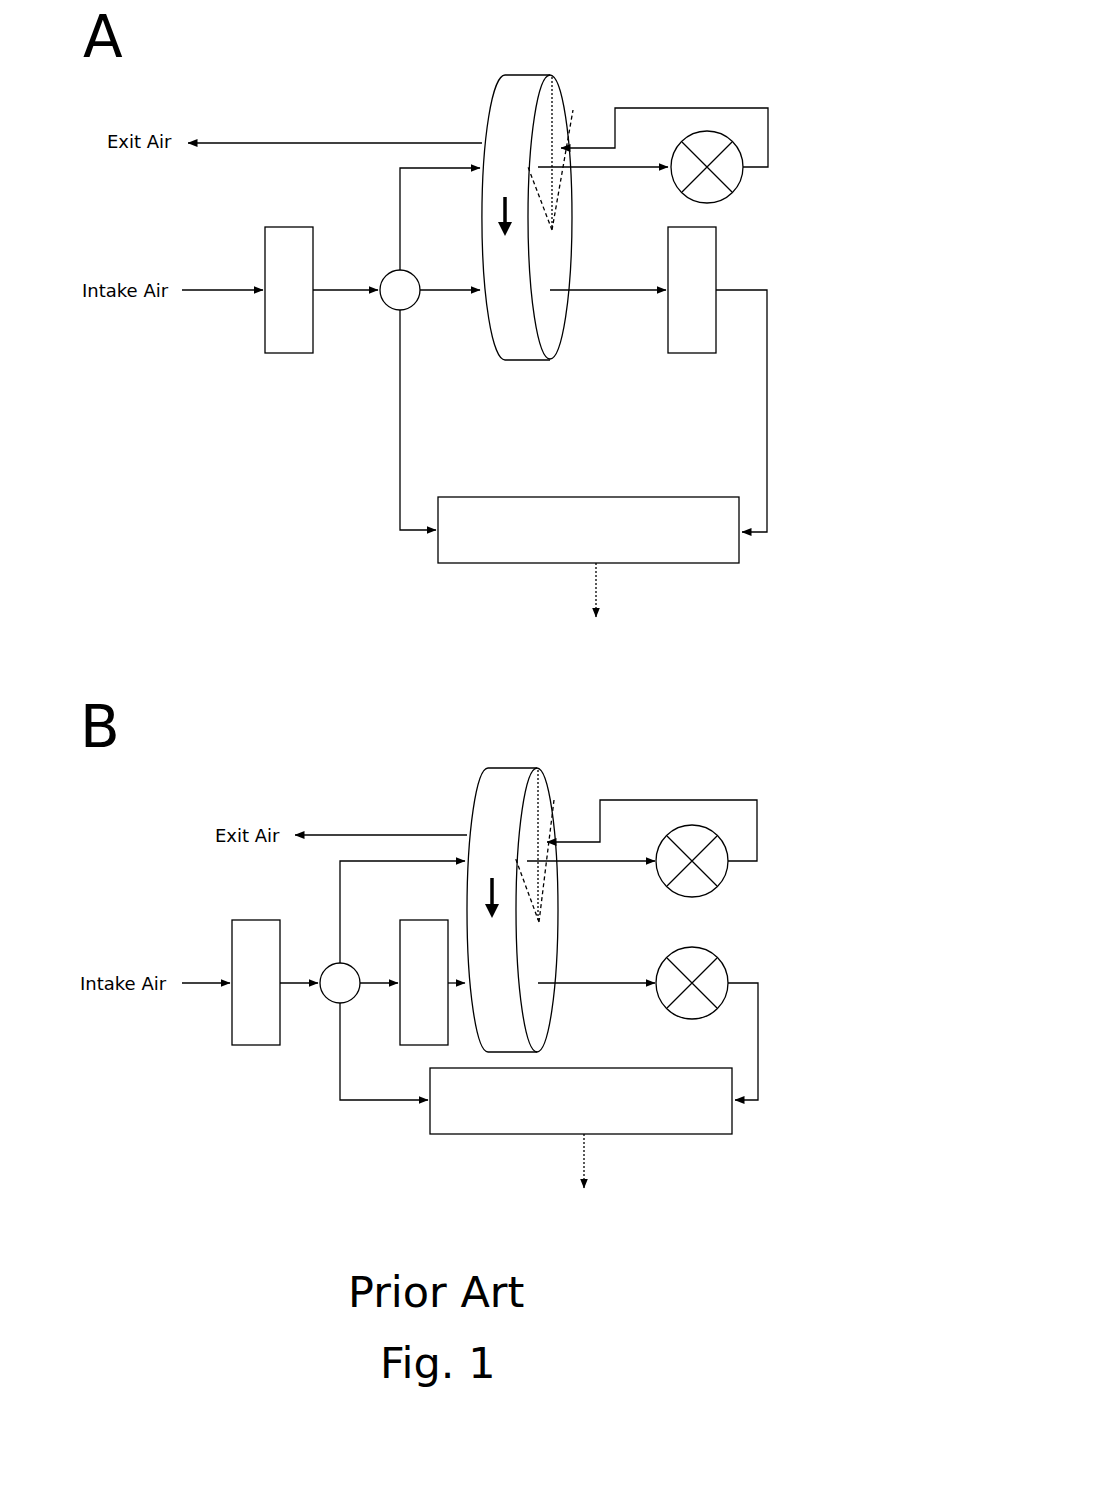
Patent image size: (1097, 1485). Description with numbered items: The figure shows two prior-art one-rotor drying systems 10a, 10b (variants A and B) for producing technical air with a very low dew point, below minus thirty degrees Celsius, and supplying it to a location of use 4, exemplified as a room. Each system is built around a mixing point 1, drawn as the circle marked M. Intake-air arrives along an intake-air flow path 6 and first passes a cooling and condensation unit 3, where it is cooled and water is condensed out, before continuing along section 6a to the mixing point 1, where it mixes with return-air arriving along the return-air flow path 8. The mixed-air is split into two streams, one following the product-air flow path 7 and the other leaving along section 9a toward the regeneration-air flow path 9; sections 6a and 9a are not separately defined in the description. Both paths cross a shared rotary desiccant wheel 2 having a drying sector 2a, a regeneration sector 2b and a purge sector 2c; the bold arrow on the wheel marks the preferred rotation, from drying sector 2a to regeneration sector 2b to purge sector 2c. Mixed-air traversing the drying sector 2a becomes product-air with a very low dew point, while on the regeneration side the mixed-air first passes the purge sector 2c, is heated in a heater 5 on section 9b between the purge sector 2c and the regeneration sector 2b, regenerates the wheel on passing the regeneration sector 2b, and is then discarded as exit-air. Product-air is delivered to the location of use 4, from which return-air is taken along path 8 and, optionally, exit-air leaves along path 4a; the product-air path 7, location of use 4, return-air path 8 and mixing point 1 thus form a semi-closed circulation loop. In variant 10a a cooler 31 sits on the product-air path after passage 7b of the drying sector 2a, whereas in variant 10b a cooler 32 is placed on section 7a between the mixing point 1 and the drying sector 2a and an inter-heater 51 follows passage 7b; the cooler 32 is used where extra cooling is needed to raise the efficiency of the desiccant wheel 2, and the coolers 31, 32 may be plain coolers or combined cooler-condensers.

The mixing point 1 is at (380, 275).
The rotary desiccant wheel 2 is at (488, 92).
The drying sector 2a is at (543, 283).
The regeneration sector 2b is at (563, 127).
The purge sector 2c is at (546, 104).
The cooling and condensation unit 3 is at (263, 257).
The location of use 4 is at (743, 552).
The exit-air flow path 4a is at (603, 580).
The heater 5 is at (746, 182).
The intake-air flow path 6 is at (212, 298).
The cooled intake air line 6a is at (337, 298).
The product-air flow path 7 is at (763, 461).
The product-air flow path section between mixing point and drying sector 7a is at (440, 298).
The product-air flow path section after drying sector 7b is at (608, 298).
The return-air flow path 8 is at (406, 457).
The regeneration-air flow path 9 is at (322, 139).
The regeneration air branch line 9a is at (398, 237).
The regeneration-air flow path section between purge and regeneration sectors 9b is at (677, 104).
The first variant one-rotor drying system 10a is at (208, 565).
The second variant one-rotor drying system 10b is at (206, 1138).
The cooler 31 is at (723, 262).
The cooler 32 is at (400, 952).
The inter-heater 51 is at (723, 955).